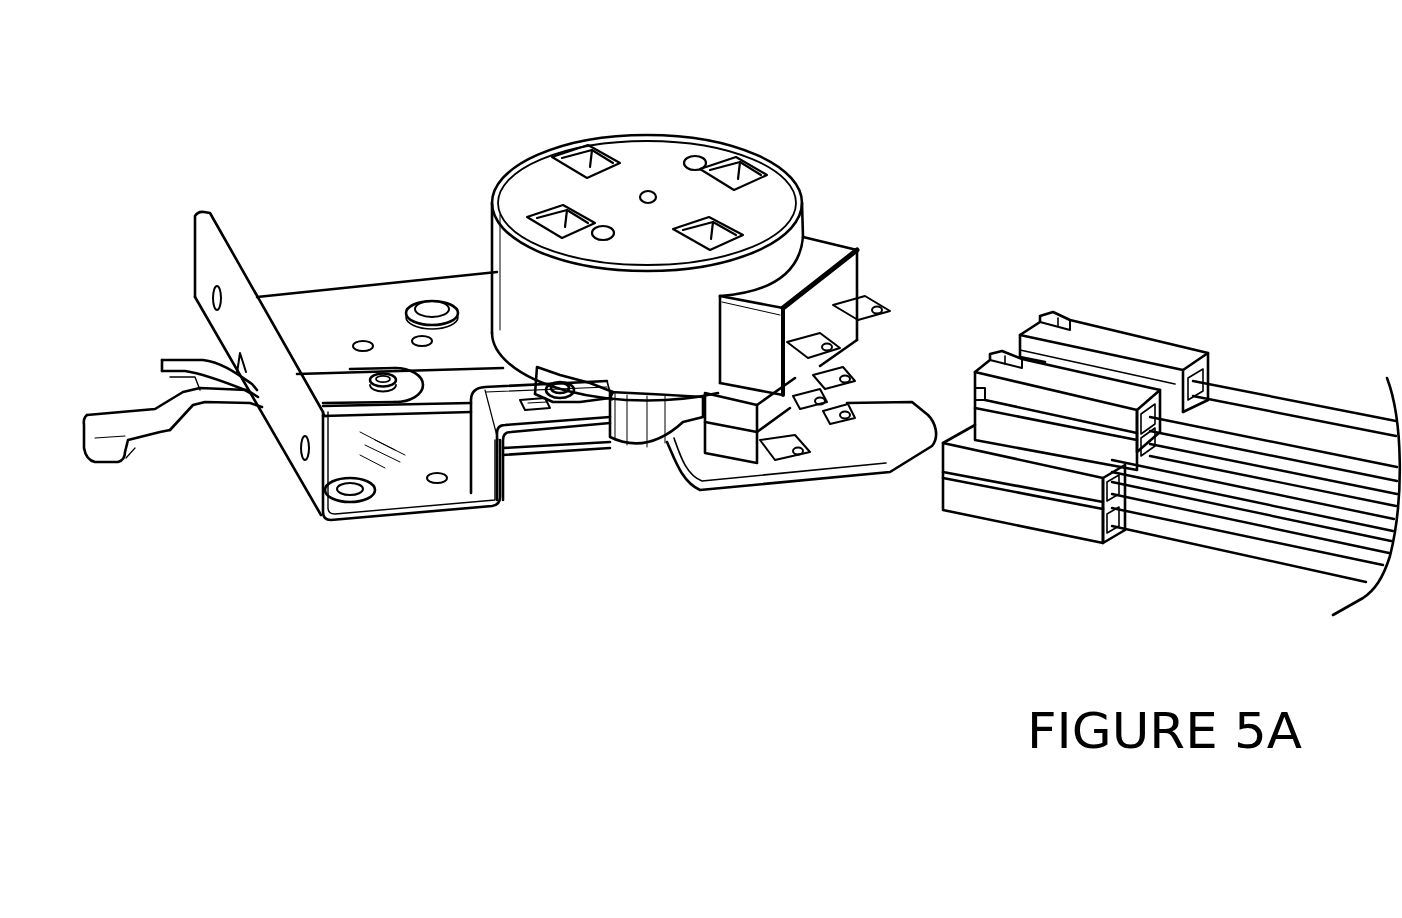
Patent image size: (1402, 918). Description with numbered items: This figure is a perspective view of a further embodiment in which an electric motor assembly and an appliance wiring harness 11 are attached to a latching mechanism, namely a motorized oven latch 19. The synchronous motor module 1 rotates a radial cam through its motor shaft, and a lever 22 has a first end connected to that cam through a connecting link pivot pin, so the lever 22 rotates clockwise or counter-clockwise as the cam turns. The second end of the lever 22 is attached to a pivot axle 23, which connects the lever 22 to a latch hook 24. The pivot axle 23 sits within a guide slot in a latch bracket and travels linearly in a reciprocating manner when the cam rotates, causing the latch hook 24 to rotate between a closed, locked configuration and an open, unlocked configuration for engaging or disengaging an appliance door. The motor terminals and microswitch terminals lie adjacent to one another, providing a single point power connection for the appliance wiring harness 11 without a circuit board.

The synchronous motor module 1 is at (710, 140).
The appliance wiring harness 11 is at (1097, 538).
The motorized oven latch 19 is at (412, 515).
The lever 22 is at (467, 390).
The pivot axle 23 is at (380, 372).
The latch hook 24 is at (147, 415).